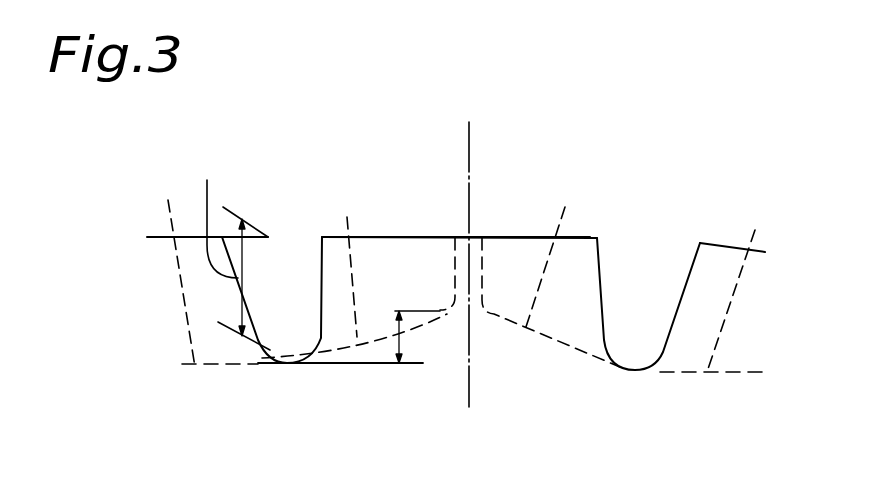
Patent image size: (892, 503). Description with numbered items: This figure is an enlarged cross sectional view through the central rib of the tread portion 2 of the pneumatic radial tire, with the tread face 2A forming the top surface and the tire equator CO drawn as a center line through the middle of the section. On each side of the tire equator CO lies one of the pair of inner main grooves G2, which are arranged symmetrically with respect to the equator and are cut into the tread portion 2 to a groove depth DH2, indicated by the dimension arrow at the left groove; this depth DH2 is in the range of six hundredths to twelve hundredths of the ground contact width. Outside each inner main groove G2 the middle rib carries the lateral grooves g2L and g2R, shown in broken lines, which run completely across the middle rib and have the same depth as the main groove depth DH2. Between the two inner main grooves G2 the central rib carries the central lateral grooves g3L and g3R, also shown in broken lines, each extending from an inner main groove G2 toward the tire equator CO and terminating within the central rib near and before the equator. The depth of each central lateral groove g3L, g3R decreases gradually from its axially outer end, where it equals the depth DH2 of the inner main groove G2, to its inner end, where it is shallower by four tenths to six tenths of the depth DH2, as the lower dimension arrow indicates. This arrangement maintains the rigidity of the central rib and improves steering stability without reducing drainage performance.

The tread portion 2 is at (519, 206).
The tread face 2A is at (417, 237).
The tire equator CO is at (470, 138).
The inner main groove G2 is at (290, 240).
The groove depth of inner main groove DH2 is at (365, 420).
The middle lateral groove g2L is at (172, 265).
The middle lateral groove g2R is at (748, 285).
The central lateral groove g3L is at (359, 260).
The central lateral groove g3R is at (567, 253).